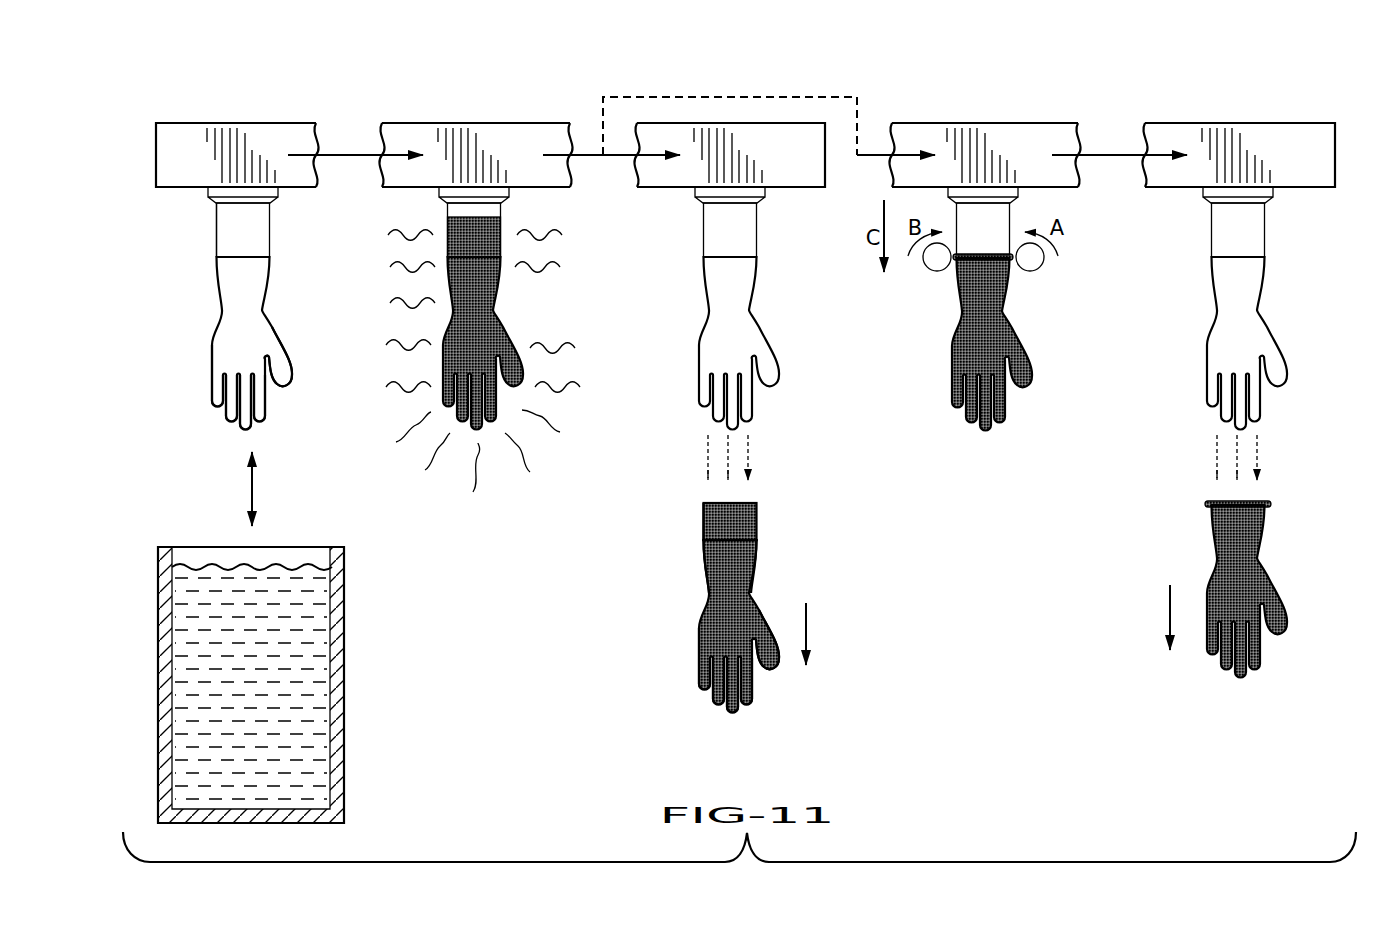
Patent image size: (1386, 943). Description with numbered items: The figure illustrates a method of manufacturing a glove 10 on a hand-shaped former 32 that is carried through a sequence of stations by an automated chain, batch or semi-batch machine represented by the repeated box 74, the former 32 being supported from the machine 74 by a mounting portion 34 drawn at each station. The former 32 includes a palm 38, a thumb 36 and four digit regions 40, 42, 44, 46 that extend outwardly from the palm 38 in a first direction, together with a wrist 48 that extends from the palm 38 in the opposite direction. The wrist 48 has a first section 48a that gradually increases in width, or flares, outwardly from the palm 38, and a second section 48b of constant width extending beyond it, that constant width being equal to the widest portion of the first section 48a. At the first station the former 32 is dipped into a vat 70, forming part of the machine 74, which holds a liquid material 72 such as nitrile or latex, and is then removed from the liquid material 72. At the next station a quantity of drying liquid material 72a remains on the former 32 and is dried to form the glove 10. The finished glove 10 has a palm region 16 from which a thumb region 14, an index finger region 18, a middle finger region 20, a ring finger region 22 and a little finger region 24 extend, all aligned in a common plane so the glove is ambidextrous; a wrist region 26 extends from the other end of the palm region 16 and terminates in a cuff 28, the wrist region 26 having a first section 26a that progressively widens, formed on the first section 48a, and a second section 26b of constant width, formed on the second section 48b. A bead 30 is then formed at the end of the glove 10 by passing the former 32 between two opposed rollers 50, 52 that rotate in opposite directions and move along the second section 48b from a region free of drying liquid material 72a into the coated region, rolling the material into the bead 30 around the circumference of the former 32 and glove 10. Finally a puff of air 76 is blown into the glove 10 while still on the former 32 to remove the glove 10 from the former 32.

The machine 74 is at (248, 121).
The former mounting neck 34 is at (208, 198).
The wrist 48 is at (214, 241).
The second section 48b is at (258, 233).
The first section 48a is at (258, 283).
The former 32 is at (211, 300).
The palm 38 is at (245, 357).
The thumb 36 is at (291, 366).
The digit region 46 is at (214, 400).
The digit region 40 is at (263, 411).
The digit region 44 is at (232, 431).
The digit region 42 is at (246, 433).
The vat 70 is at (348, 632).
The liquid material 72 is at (270, 715).
The drying liquid material 72a is at (522, 335).
The puff of air 76 is at (751, 452).
The glove 10 is at (1022, 331).
The cuff 28 is at (741, 507).
The second section 26b is at (715, 525).
The wrist region 26 is at (664, 566).
The first section 26a is at (754, 566).
The palm region 16 is at (727, 632).
The little finger region 24 is at (701, 684).
The ring finger region 22 is at (715, 705).
The middle finger region 20 is at (732, 718).
The index finger region 18 is at (751, 708).
The thumb region 14 is at (774, 667).
The bead 30 is at (978, 262).
The roller 50 is at (1038, 272).
The roller 52 is at (928, 268).